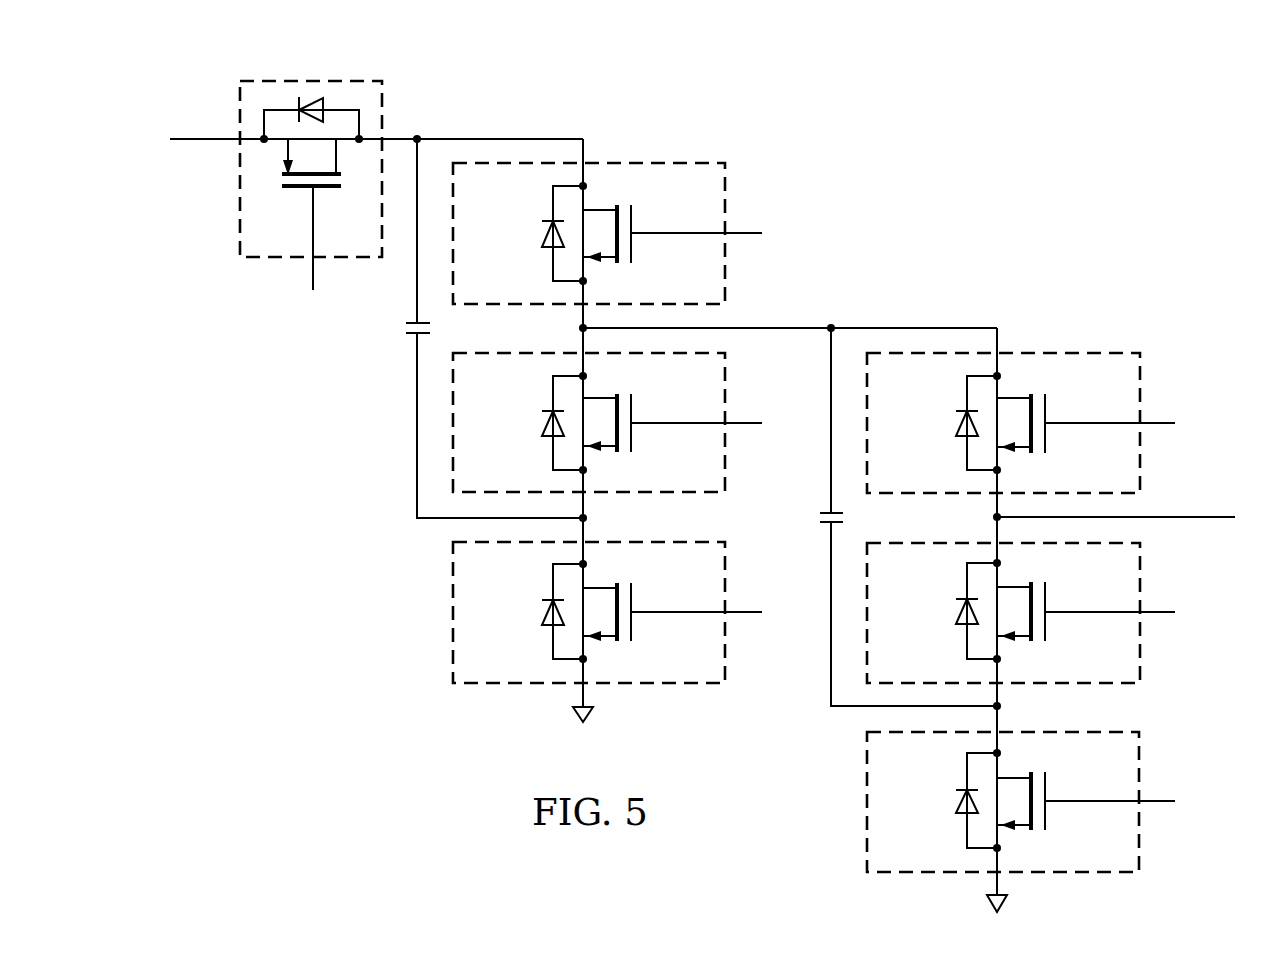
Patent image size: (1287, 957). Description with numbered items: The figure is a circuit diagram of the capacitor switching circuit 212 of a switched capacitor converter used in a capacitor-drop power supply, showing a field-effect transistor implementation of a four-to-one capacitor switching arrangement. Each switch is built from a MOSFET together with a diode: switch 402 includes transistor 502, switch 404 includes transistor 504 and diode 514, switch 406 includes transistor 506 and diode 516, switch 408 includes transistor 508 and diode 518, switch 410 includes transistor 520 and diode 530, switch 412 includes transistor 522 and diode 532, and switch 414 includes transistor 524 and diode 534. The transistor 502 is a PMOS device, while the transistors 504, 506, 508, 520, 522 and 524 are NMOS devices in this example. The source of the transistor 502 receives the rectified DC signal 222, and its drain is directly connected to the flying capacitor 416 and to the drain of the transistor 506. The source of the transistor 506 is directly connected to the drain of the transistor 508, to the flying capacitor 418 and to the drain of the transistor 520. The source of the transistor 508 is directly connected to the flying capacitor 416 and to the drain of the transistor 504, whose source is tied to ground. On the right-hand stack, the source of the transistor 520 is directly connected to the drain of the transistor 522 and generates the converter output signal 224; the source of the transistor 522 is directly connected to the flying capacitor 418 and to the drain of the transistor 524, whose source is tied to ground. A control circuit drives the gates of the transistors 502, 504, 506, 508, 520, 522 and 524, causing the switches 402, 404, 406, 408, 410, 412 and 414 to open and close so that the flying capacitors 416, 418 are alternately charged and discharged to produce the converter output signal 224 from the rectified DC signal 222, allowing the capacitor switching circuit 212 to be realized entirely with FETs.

The capacitor switching circuit 212 is at (955, 86).
The rectified DC signal 222 is at (203, 137).
The converter output signal 224 is at (1197, 519).
The switch 402 is at (296, 70).
The transistor 502 is at (292, 188).
The switch 404 is at (738, 659).
The switch 406 is at (738, 188).
The switch 408 is at (738, 377).
The switch 410 is at (1152, 377).
The switch 412 is at (1152, 656).
The switch 414 is at (1152, 850).
The flying capacitor 416 is at (405, 325).
The flying capacitor 418 is at (820, 517).
The transistor 504 is at (637, 631).
The transistor 506 is at (637, 222).
The transistor 508 is at (637, 412).
The diode 514 is at (541, 604).
The diode 516 is at (541, 226).
The diode 518 is at (541, 416).
The transistor 520 is at (1051, 410).
The transistor 522 is at (1051, 634).
The transistor 524 is at (1051, 822).
The diode 530 is at (955, 414).
The diode 532 is at (955, 604).
The diode 534 is at (955, 793).